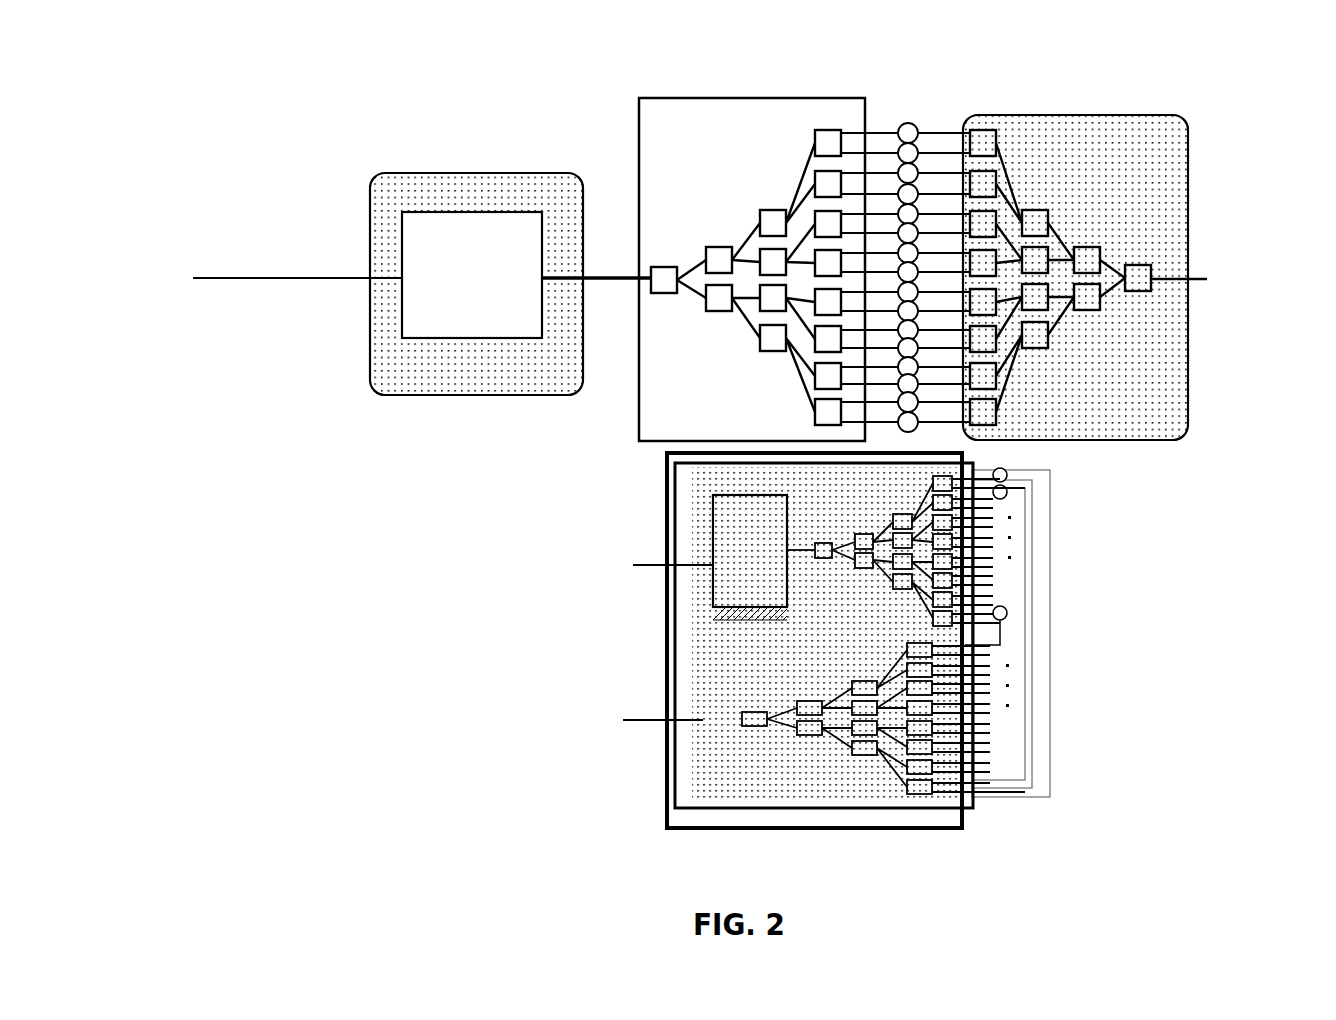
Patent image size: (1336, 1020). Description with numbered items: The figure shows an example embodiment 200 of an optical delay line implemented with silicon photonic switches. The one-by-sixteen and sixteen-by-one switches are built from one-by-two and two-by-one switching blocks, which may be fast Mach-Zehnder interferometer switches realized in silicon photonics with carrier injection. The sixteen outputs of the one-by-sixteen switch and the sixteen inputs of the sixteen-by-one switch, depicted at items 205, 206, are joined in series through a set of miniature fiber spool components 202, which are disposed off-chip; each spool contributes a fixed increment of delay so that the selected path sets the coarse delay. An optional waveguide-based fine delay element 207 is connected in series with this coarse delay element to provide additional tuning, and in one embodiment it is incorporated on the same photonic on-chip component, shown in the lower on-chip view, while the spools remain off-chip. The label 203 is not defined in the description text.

The example embodiment 200 is at (265, 86).
The miniature fiber spool components 202 is at (918, 133).
The on-chip photonic circuit 203 is at (781, 640).
The 1×N switch outputs 205 is at (1063, 237).
The N×1 switch inputs 206 is at (753, 233).
The waveguide-based fine delay element 207 is at (486, 323).